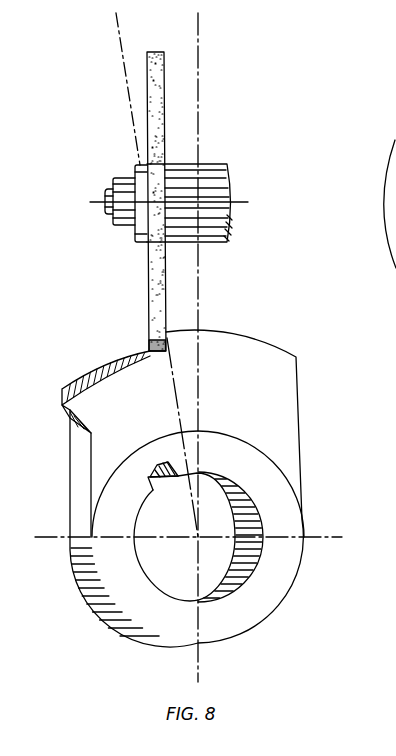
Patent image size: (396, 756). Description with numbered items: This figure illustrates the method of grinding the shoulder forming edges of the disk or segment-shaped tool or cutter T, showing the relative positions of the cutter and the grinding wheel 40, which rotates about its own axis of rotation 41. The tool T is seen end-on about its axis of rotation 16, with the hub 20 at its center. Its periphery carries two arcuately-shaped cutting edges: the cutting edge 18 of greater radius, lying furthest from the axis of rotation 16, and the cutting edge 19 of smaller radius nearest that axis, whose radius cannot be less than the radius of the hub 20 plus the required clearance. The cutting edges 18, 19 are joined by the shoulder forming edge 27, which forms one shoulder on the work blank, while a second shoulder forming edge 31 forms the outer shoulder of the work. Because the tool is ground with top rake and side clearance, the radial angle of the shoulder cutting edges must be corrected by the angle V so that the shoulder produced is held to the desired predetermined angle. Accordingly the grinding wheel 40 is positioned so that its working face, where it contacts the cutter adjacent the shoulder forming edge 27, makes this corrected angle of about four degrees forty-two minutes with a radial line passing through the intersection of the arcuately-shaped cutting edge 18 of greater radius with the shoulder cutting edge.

The axis of rotation 16 is at (322, 537).
The arcuately-shaped cutting edge 18 is at (226, 338).
The arcuately-shaped cutting edge 19 is at (80, 382).
The hub 20 is at (120, 582).
The shoulder forming edge 27 is at (149, 344).
The shoulder forming edge 31 is at (62, 411).
The grinding wheel 40 is at (166, 100).
The axis of rotation of grinding wheel 41 is at (234, 202).
The tool or cutter T is at (100, 440).
The correction angle V is at (197, 24).